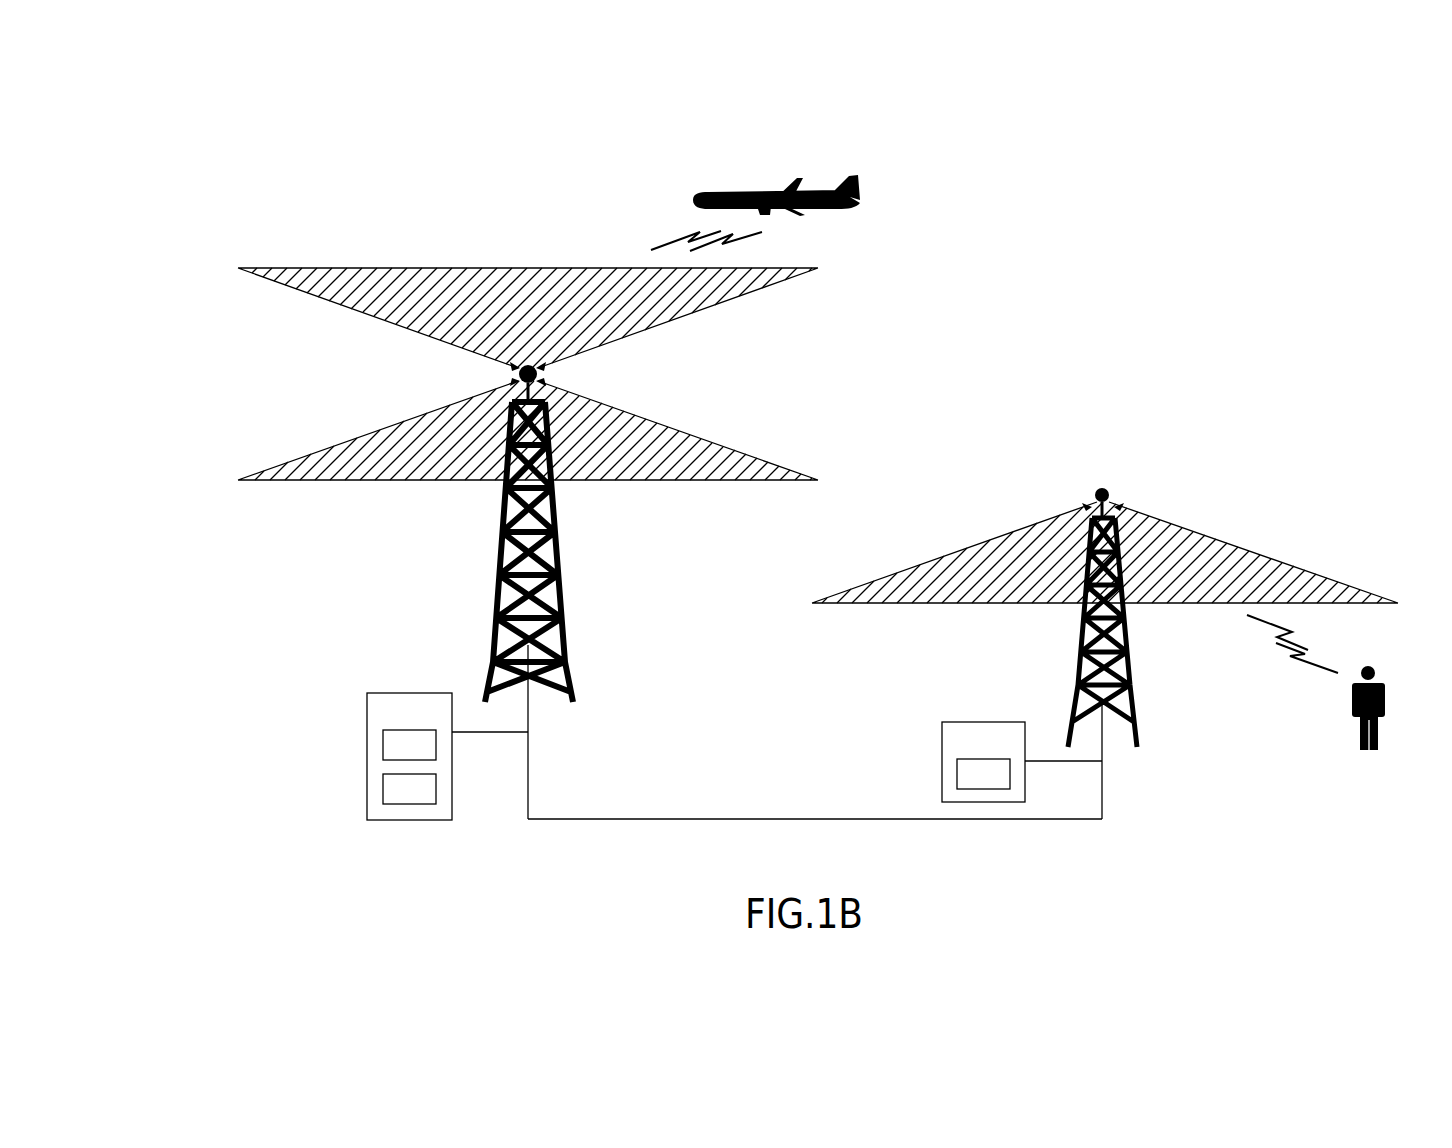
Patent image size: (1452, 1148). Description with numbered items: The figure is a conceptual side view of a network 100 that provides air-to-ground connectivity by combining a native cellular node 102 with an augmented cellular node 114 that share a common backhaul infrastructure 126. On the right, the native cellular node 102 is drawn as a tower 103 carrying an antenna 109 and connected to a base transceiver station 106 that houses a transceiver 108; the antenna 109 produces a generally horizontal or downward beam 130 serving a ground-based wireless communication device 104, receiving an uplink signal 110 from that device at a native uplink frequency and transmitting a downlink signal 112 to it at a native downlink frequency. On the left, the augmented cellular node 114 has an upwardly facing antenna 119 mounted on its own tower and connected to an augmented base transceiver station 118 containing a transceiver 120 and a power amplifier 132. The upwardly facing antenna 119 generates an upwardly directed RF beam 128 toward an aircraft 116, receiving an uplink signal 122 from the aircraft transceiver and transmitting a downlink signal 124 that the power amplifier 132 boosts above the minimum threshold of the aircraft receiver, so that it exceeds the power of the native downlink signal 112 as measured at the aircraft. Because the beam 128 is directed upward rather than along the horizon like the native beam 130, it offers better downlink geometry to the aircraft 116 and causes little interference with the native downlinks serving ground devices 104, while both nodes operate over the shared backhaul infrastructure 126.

The network 100 is at (241, 144).
The native cellular network node 102 is at (1102, 463).
The terrestrial tower 103 is at (1076, 664).
The ground-based wireless communication device 104 is at (1386, 695).
The base transceiver station 106 is at (942, 729).
The transceiver 108 is at (957, 774).
The antenna 109 is at (1111, 499).
The uplink signal 110 is at (1277, 627).
The downlink signal 112 is at (1307, 664).
The augmented cellular node 114 is at (390, 216).
The aircraft 116 is at (748, 193).
The augmented base transceiver station 118 is at (367, 702).
The upwardly facing antenna 119 is at (542, 375).
The transceiver 120 is at (383, 748).
The uplink signal 122 is at (685, 236).
The downlink signal 124 is at (726, 247).
The network backhaul infrastructure 126 is at (650, 818).
The upwardly directed RF beam 128 is at (513, 280).
The native downlink beam 130 is at (960, 593).
The power amplifier 132 is at (383, 790).